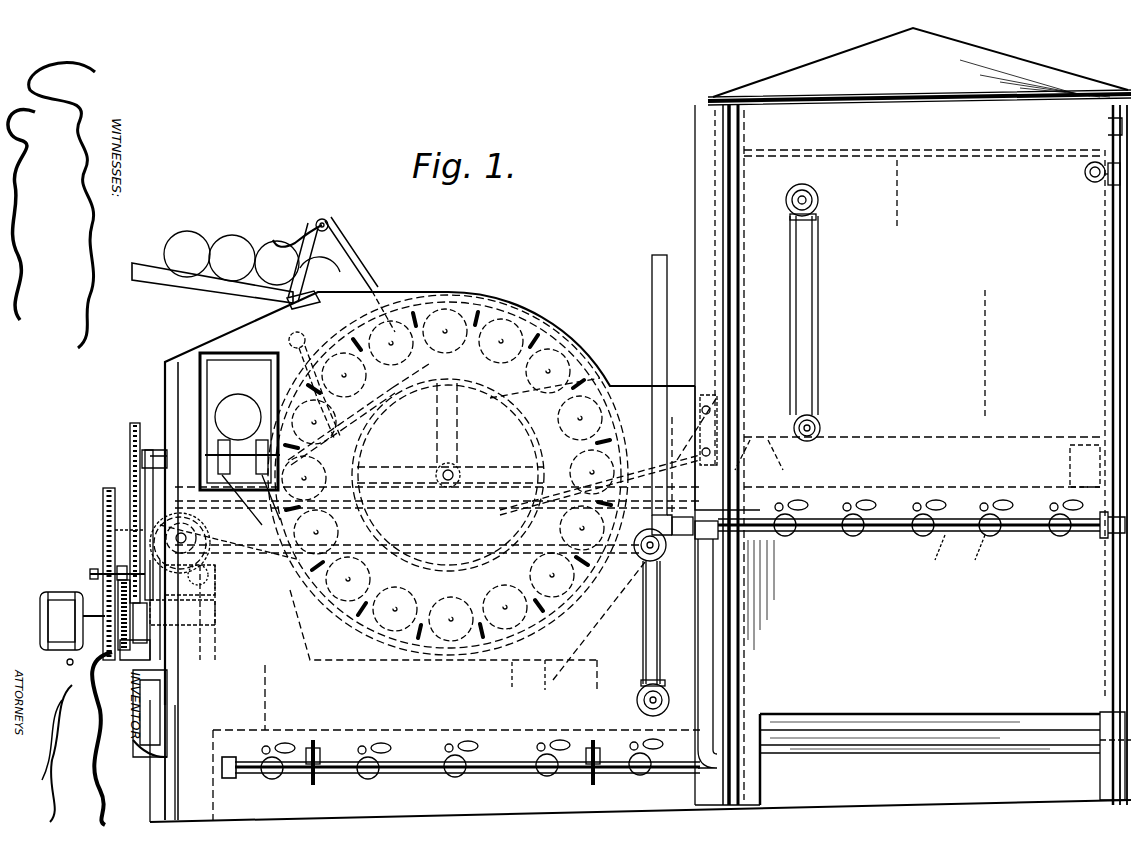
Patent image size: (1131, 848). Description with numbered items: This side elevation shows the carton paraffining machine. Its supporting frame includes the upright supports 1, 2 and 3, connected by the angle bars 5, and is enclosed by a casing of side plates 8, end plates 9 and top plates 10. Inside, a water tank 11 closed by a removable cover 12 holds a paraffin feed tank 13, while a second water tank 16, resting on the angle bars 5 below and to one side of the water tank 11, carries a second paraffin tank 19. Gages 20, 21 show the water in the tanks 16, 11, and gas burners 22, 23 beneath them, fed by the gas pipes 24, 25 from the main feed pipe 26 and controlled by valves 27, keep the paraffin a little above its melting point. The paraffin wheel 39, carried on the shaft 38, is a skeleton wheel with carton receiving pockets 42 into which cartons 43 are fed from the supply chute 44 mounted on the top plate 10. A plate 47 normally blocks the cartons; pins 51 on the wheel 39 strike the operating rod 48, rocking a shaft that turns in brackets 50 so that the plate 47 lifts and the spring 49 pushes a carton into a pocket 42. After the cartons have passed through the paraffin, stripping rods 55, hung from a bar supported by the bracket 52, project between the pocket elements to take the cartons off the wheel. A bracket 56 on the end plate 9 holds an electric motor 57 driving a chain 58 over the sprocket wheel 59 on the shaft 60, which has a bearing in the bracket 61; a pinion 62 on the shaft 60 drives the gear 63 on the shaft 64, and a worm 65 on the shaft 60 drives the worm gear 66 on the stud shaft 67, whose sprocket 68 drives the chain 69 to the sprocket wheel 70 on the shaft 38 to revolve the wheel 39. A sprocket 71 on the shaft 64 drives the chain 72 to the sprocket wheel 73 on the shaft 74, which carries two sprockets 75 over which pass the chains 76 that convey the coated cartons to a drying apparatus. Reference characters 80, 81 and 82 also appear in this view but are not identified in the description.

The upright support 1 is at (635, 761).
The upright support 2 is at (764, 725).
The upright support 3 is at (1108, 715).
The angle bar 5 is at (940, 725).
The side plate 8 is at (776, 455).
The end plate 9 is at (1112, 579).
The top plate 10 is at (525, 318).
The water tank 11 is at (742, 235).
The removable cover 12 is at (780, 77).
The paraffin feed tank 13 is at (928, 437).
The second water tank 16 is at (398, 728).
The second paraffin tank 19 is at (566, 665).
The gage 20 is at (640, 614).
The gage 21 is at (812, 295).
The gas burner 22 is at (545, 778).
The gas burner 23 is at (985, 540).
The gas pipe 24 is at (426, 770).
The gas pipe 25 is at (896, 535).
The main feed pipe 26 is at (650, 283).
The valve 27 is at (538, 748).
The shaft 38 is at (458, 472).
The paraffin wheel 39 is at (518, 392).
The carton receiving pocket 42 is at (450, 420).
The carton 43 is at (225, 245).
The supply chute 44 is at (212, 283).
The plate 47 is at (338, 250).
The operating rod 48 is at (352, 268).
The spring 49 is at (292, 235).
The bracket 50 is at (332, 230).
The pin 51 is at (420, 600).
The bracket 52 is at (281, 333).
The stripping rod 55 is at (320, 387).
The bracket 56 is at (160, 725).
The electric motor 57 is at (52, 596).
The chain 58 is at (103, 532).
The sprocket wheel 59 is at (102, 498).
The shaft 60 is at (98, 573).
The bracket 61 is at (212, 618).
The pinion 62 is at (117, 568).
The gear 63 is at (144, 631).
The shaft 64 is at (63, 621).
The worm 65 is at (210, 598).
The worm gear 66 is at (212, 545).
The stud shaft 67 is at (230, 556).
The sprocket 68 is at (184, 520).
The chain 69 is at (420, 400).
The sprocket wheel 70 is at (397, 560).
The sprocket 71 is at (205, 645).
The chain 72 is at (130, 492).
The sprocket wheel 73 is at (128, 432).
The shaft 74 is at (160, 455).
The sprocket 75 is at (242, 487).
The chain 76 is at (232, 440).
The hinge plate 80 is at (1110, 185).
The hinge 81 is at (1085, 178).
The bracket 82 is at (1120, 124).